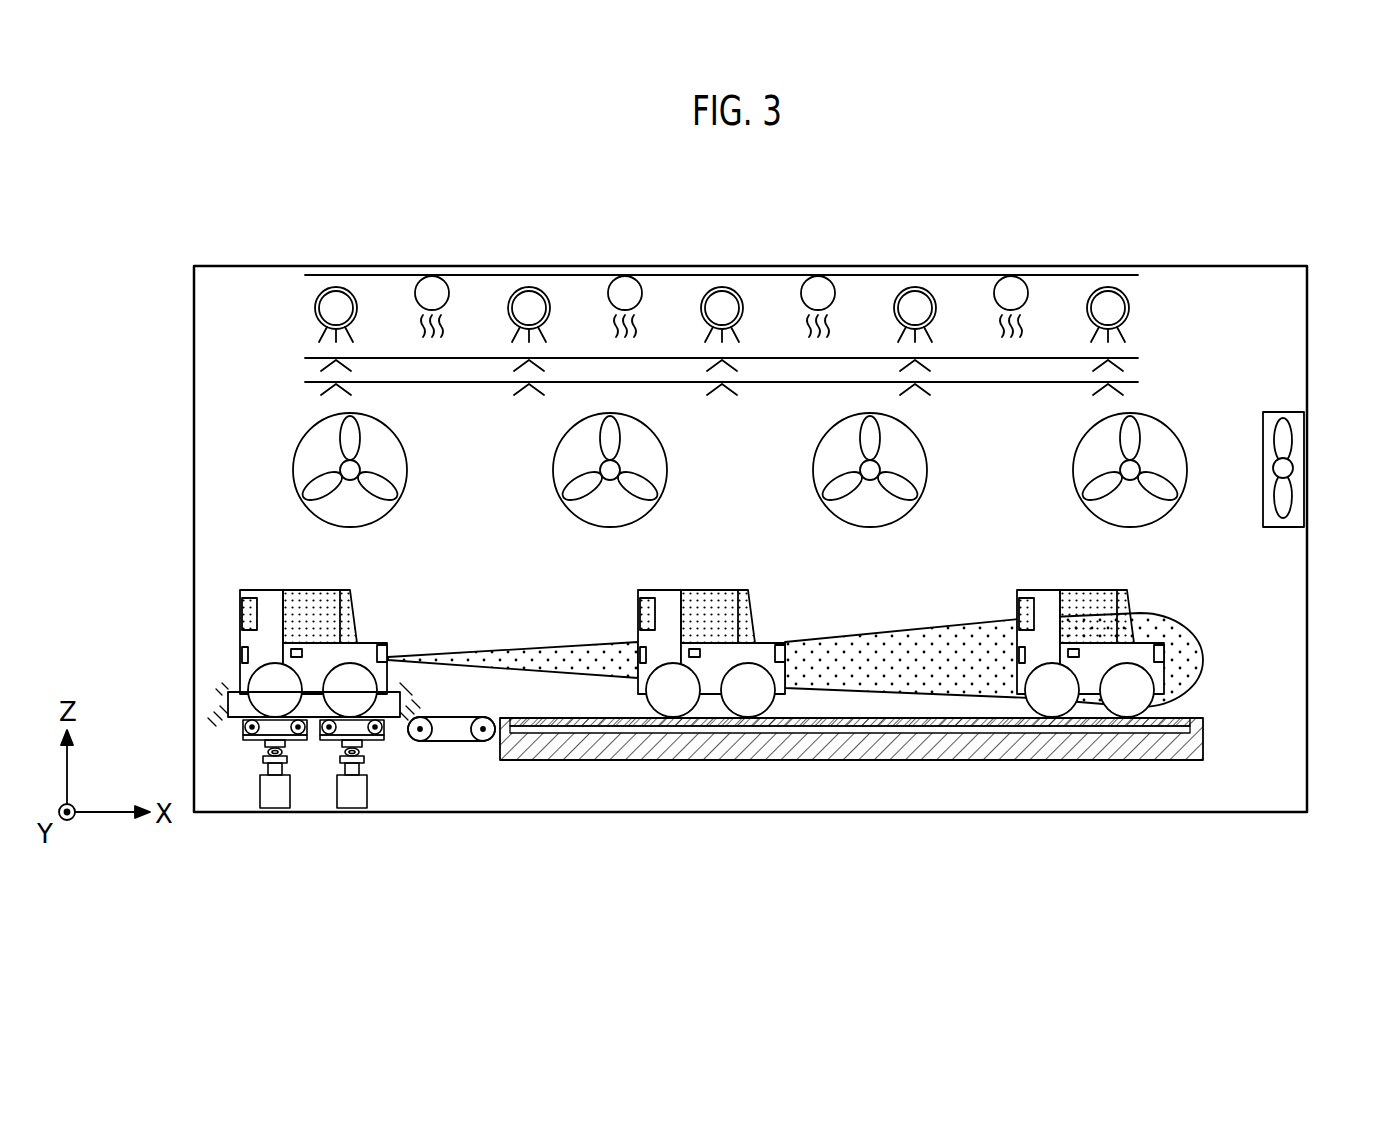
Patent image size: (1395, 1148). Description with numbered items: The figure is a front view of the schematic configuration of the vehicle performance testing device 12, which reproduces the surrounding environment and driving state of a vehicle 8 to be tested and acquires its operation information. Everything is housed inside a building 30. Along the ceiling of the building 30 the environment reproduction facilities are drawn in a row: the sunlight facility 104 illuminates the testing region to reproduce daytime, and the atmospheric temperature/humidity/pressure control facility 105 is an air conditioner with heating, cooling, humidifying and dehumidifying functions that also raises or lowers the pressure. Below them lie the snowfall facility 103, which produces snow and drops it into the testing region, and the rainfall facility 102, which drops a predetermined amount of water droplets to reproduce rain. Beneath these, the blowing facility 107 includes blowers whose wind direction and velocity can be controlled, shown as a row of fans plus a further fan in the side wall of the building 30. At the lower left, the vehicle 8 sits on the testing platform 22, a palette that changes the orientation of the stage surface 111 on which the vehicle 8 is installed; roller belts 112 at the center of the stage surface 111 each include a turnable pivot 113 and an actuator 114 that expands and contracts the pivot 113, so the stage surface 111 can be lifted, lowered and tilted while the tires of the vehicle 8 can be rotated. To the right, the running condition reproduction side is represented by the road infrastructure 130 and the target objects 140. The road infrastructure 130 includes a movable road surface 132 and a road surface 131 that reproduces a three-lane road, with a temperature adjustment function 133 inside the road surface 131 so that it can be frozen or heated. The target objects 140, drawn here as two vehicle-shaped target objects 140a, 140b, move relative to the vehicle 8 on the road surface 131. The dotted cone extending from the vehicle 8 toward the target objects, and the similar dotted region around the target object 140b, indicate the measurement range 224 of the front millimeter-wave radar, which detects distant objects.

The vehicle performance testing device 12 is at (1262, 229).
The building 30 is at (1307, 312).
The sunlight facility 104 is at (314, 303).
The atmospheric temperature/humidity/pressure control facility 105 is at (418, 292).
The snowfall facility 103 is at (330, 366).
The rainfall facility 102 is at (330, 392).
The blowing facility 107 is at (1165, 418).
The vehicle to be tested 8 is at (224, 594).
The target object 140 is at (618, 595).
The first mobile coating robot 140a is at (706, 589).
The second mobile coating robot 140b is at (1135, 600).
The millimeter-wave radar measurement range 224 is at (1205, 661).
The stage surface 111 is at (245, 712).
The testing platform 22 is at (204, 733).
The roller belt 112 is at (300, 742).
The pivot 113 is at (263, 750).
The actuator 114 is at (290, 793).
The road infrastructure 130 is at (1217, 774).
The movable road surface 132 is at (453, 706).
The temperature adjustment function 133 is at (966, 761).
The road surface 131 is at (1195, 717).